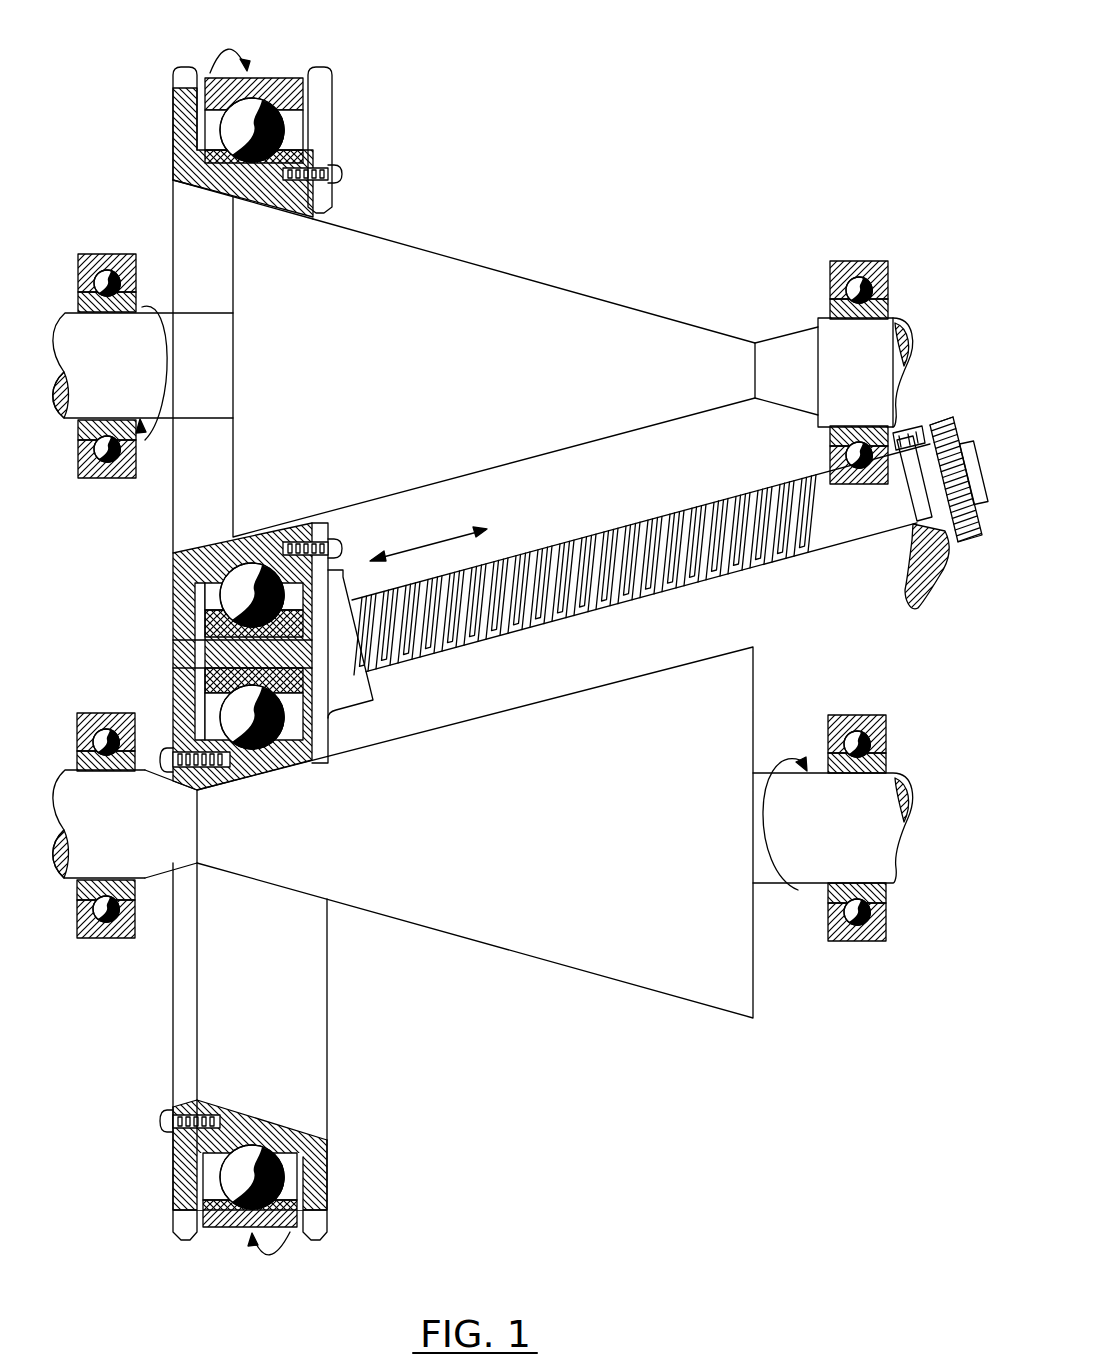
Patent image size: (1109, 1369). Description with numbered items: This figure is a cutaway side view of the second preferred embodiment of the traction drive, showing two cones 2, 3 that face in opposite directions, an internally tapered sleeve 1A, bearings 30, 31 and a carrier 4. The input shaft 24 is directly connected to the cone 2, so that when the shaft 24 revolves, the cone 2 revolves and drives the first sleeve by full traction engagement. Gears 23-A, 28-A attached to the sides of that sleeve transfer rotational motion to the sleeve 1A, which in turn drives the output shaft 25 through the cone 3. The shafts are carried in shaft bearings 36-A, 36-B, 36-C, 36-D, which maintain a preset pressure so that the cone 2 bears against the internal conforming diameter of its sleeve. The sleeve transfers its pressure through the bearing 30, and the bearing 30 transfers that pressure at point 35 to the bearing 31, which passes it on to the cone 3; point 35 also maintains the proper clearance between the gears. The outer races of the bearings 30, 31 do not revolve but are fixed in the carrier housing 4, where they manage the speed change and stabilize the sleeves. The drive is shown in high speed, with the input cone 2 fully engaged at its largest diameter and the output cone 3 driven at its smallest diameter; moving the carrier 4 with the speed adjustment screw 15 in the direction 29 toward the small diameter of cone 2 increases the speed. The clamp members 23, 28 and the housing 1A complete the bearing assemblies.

The internally tapered sleeve 1A is at (263, 1142).
The cone 2 is at (420, 277).
The cone 3 is at (500, 912).
The carrier 4 is at (373, 688).
The speed adjustment screw 15 is at (537, 550).
The upper bearing housing 23 is at (186, 104).
The gear 23-A is at (320, 117).
The input shaft 24 is at (92, 392).
The shaft 25 is at (893, 773).
The lower housing post 28 is at (172, 1162).
The gear 28-A is at (327, 1180).
The direction of bar movement 29 is at (428, 537).
The bearing 30 is at (258, 78).
The bearing 31 is at (243, 1227).
The point 35 is at (176, 670).
The shaft bearing 36-A is at (88, 254).
The shaft bearing 36-B is at (848, 262).
The shaft bearing 36-C is at (103, 938).
The shaft bearing 36-D is at (873, 945).